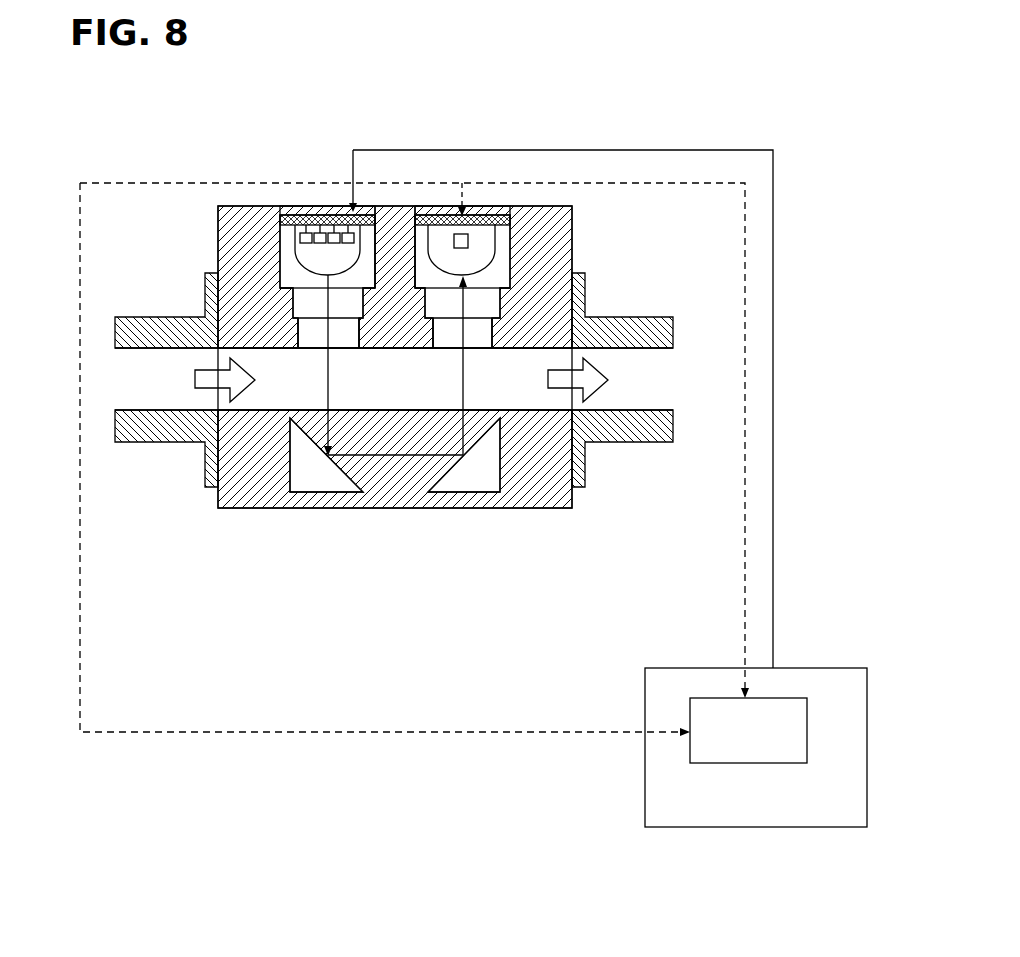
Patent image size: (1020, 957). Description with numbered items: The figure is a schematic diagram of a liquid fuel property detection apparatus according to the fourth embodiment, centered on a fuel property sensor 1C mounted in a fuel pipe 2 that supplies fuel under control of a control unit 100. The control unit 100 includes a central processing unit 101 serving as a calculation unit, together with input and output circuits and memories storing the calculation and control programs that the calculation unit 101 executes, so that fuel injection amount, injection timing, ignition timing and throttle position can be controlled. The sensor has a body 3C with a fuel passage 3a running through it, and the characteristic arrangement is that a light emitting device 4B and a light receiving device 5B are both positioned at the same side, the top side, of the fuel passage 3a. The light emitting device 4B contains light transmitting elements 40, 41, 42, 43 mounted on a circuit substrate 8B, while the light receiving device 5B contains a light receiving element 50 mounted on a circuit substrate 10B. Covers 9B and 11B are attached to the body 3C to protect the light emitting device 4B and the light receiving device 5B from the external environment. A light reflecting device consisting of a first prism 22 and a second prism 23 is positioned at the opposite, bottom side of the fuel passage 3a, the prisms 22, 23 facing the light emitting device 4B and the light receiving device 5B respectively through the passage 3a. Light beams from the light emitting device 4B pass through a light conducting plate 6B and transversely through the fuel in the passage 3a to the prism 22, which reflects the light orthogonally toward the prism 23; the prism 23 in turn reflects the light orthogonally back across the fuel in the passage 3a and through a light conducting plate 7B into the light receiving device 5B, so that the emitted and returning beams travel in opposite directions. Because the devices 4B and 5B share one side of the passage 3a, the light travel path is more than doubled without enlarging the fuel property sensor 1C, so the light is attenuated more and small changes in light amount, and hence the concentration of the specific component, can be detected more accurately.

The fuel property sensor 1C is at (200, 163).
The fuel pipe 2 is at (145, 317).
The body 3C is at (230, 227).
The fuel passage 3a is at (272, 405).
The light emitting device 4B is at (286, 246).
The light transmitting element 40 is at (307, 208).
The light transmitting element 41 is at (320, 213).
The light transmitting element 42 is at (336, 213).
The light transmitting element 43 is at (346, 212).
The cover 9B is at (357, 211).
The circuit substrate 8B is at (383, 217).
The circuit substrate 10B is at (455, 215).
The cover 11B is at (485, 211).
The light receiving element 50 is at (468, 240).
The light receiving device 5B is at (502, 255).
The light conducting plate 6B is at (310, 332).
The light conducting plate 7B is at (478, 332).
The first prism 22 is at (330, 482).
The second prism 23 is at (467, 483).
The control unit 100 is at (850, 668).
The central processing unit 101 is at (782, 698).